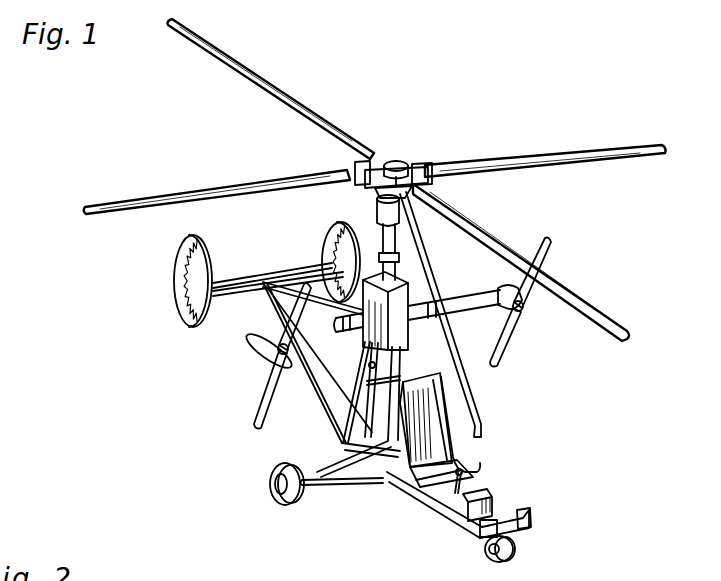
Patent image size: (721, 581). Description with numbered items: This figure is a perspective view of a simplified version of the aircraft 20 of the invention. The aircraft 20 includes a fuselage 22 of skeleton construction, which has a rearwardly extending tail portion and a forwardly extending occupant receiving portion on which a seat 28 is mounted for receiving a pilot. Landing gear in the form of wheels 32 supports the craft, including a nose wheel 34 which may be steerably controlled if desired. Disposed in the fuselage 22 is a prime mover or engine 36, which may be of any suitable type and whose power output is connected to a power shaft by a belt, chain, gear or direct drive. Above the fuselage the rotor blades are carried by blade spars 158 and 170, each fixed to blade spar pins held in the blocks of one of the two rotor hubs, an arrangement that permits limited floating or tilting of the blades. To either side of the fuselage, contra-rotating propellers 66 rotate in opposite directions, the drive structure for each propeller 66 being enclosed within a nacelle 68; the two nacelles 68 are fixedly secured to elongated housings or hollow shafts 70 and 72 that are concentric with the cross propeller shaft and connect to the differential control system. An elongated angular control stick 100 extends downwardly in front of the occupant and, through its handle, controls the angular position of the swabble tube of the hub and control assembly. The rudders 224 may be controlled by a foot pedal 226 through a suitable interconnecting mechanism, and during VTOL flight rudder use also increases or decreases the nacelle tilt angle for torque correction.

The aircraft 20 is at (412, 140).
The fuselage 22 is at (355, 462).
The seat 28 is at (462, 468).
The wheels 32 is at (273, 494).
The nose wheel 34 is at (495, 551).
The engine 36 is at (357, 364).
The contra-rotating propellers 66 is at (500, 357).
The nacelle 68 is at (262, 350).
The hollow shaft 70 is at (290, 334).
The hollow shaft 72 is at (458, 300).
The control stick 100 is at (433, 243).
The blade spar 158 is at (292, 101).
The blade spar 170 is at (522, 163).
The rudder 224 is at (178, 303).
The foot pedal 226 is at (519, 512).